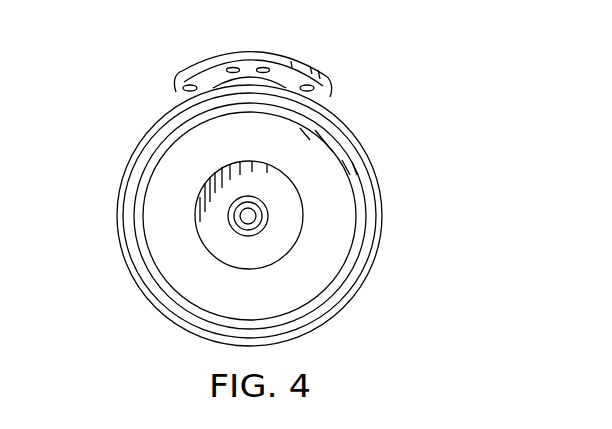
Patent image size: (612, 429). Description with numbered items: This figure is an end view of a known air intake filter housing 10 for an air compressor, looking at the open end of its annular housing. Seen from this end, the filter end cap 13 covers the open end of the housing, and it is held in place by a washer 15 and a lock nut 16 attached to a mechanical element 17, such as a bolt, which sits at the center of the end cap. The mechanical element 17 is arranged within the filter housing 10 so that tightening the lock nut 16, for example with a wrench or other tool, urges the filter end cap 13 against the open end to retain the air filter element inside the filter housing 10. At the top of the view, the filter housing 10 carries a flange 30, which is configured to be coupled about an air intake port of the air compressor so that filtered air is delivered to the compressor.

The air intake filter housing 10 is at (355, 72).
The filter end cap 13 is at (325, 165).
The washer 15 is at (268, 218).
The lock nut 16 is at (259, 228).
The mechanical element 17 is at (234, 217).
The flange 30 is at (188, 61).